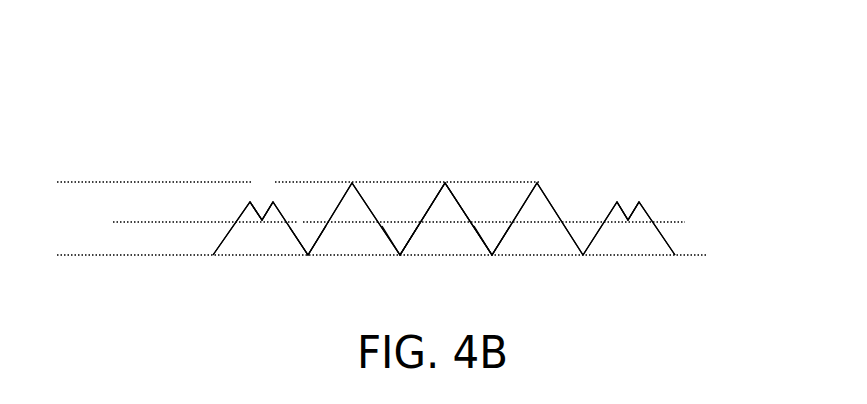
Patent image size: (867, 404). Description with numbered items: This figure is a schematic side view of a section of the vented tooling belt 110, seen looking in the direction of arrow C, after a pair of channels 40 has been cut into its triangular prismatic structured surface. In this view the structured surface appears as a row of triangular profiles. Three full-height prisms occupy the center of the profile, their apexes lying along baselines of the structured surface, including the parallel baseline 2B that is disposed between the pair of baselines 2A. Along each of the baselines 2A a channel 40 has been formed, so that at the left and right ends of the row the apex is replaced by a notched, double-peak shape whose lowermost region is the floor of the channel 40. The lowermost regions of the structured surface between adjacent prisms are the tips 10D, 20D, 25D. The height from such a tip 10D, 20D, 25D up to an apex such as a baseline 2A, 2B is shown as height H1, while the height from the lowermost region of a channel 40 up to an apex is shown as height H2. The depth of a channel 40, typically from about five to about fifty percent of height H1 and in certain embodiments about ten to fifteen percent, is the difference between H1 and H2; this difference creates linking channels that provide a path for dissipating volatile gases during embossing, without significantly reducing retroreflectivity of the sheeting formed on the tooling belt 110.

The tooling belt 110 is at (733, 139).
The baselines 2A is at (444, 200).
The baseline 2B is at (445, 186).
The arrow C is at (446, 198).
The channels 40 is at (262, 192).
The tip 10D is at (307, 256).
The tip 20D is at (400, 256).
The tip 25D is at (492, 256).
The height H1 is at (77, 160).
The height H2 is at (130, 202).